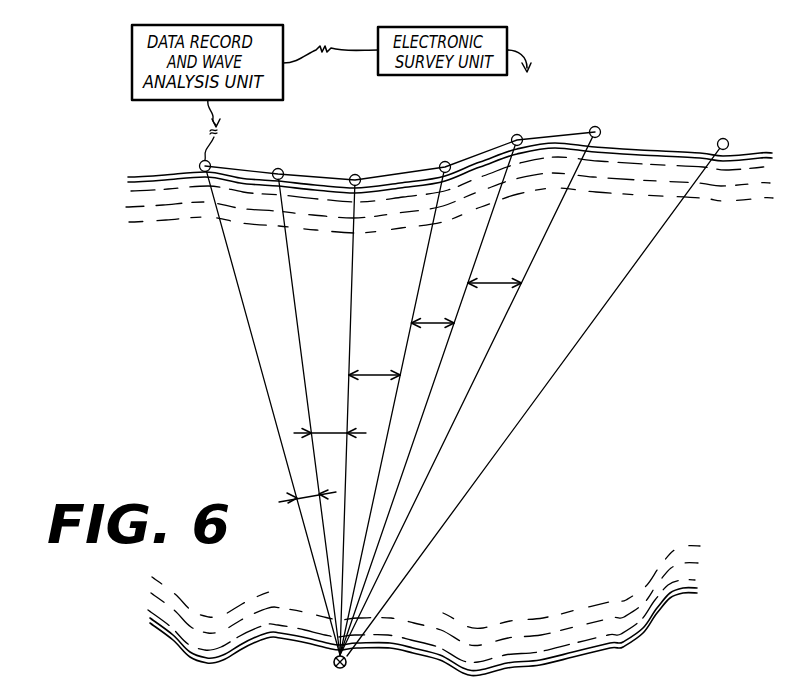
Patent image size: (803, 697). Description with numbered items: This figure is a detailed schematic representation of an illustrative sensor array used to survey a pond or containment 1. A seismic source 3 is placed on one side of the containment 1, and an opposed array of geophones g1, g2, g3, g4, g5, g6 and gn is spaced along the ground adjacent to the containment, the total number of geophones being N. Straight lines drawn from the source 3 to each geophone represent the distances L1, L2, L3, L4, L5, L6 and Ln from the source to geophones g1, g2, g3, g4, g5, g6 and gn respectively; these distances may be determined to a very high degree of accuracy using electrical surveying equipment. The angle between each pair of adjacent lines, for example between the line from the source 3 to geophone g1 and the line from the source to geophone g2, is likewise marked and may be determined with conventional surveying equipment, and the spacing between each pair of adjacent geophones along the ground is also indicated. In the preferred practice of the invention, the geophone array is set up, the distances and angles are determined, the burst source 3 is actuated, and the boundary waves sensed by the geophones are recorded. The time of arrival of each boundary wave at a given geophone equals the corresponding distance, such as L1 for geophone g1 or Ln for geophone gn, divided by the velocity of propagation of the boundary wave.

The pond or containment 1 is at (652, 396).
The seismic source 3 is at (346, 664).
The geophone g1 is at (203, 160).
The geophone g2 is at (278, 168).
The geophone g3 is at (355, 174).
The geophone g4 is at (445, 161).
The geophone g5 is at (517, 134).
The geophone g6 is at (596, 126).
The geophone gn is at (724, 138).
The distance from source to geophone L1 is at (279, 440).
The distance from source to geophone L2 is at (306, 402).
The distance from source to geophone L3 is at (347, 382).
The distance from source to geophone L4 is at (407, 344).
The distance from source to geophone L5 is at (462, 297).
The distance from source to geophone L6 is at (536, 251).
The distance from source to geophone Ln is at (545, 388).